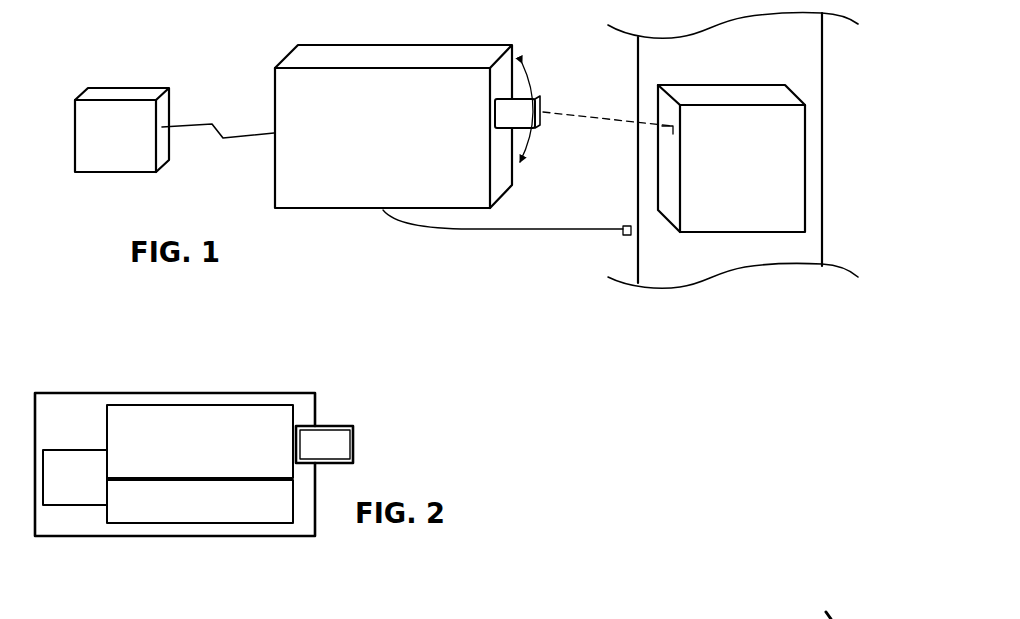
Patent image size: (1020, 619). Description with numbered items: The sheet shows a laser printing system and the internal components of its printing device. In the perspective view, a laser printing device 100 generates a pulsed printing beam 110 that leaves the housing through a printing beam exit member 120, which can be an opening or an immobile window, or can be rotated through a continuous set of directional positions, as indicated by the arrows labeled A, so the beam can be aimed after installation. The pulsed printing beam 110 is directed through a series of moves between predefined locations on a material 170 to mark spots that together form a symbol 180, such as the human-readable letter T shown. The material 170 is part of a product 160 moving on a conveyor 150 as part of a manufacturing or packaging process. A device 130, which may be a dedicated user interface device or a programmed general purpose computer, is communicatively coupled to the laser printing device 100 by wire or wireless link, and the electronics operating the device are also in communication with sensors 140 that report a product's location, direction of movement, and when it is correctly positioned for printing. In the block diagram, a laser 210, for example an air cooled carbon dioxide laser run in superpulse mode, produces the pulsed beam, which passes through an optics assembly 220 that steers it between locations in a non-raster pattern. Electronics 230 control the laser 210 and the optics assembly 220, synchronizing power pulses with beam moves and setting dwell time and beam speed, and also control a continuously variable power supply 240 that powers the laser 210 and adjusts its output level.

In FIG. 1, the laser printing device 100 is at (405, 45).
In FIG. 2, the laser printing device 100 is at (187, 393).
In FIG. 1, the pulsed printing beam 110 is at (548, 113).
In FIG. 1, the printing beam exit member 120 is at (538, 102).
In FIG. 1, the device 130 is at (145, 88).
In FIG. 1, the sensors 140 is at (622, 236).
In FIG. 1, the conveyor 150 is at (823, 77).
In FIG. 1, the product 160 is at (807, 163).
In FIG. 1, the material 170 is at (663, 110).
In FIG. 1, the symbol 180 is at (661, 134).
In FIG. 2, the laser 210 is at (220, 452).
In FIG. 2, the optics assembly 220 is at (343, 453).
In FIG. 2, the electronics 230 is at (220, 515).
In FIG. 2, the continuously variable power supply 240 is at (96, 488).